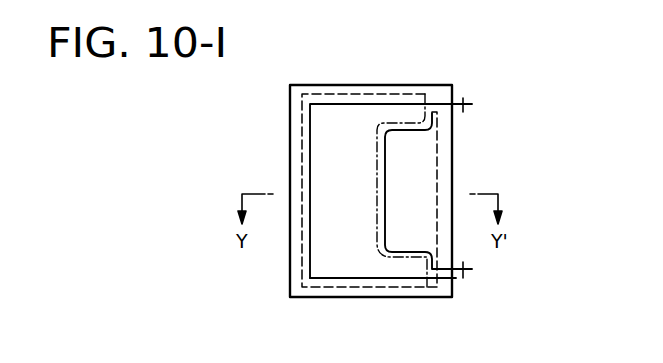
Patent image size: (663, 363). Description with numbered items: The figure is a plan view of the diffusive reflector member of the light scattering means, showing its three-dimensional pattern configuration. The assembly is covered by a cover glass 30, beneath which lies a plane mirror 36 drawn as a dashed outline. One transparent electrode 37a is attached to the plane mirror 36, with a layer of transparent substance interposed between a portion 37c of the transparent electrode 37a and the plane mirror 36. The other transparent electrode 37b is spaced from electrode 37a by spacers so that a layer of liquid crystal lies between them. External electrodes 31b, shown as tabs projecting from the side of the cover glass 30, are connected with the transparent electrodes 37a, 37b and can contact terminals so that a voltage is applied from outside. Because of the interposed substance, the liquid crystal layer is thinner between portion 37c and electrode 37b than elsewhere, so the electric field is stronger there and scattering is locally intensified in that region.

The cover glass 30 is at (290, 85).
The external electrode 31b is at (468, 113).
The plane mirror 36 is at (335, 287).
The transparent electrode 37a is at (437, 148).
The transparent electrode 37b is at (368, 108).
The portion of the transparent electrode 37c is at (395, 257).